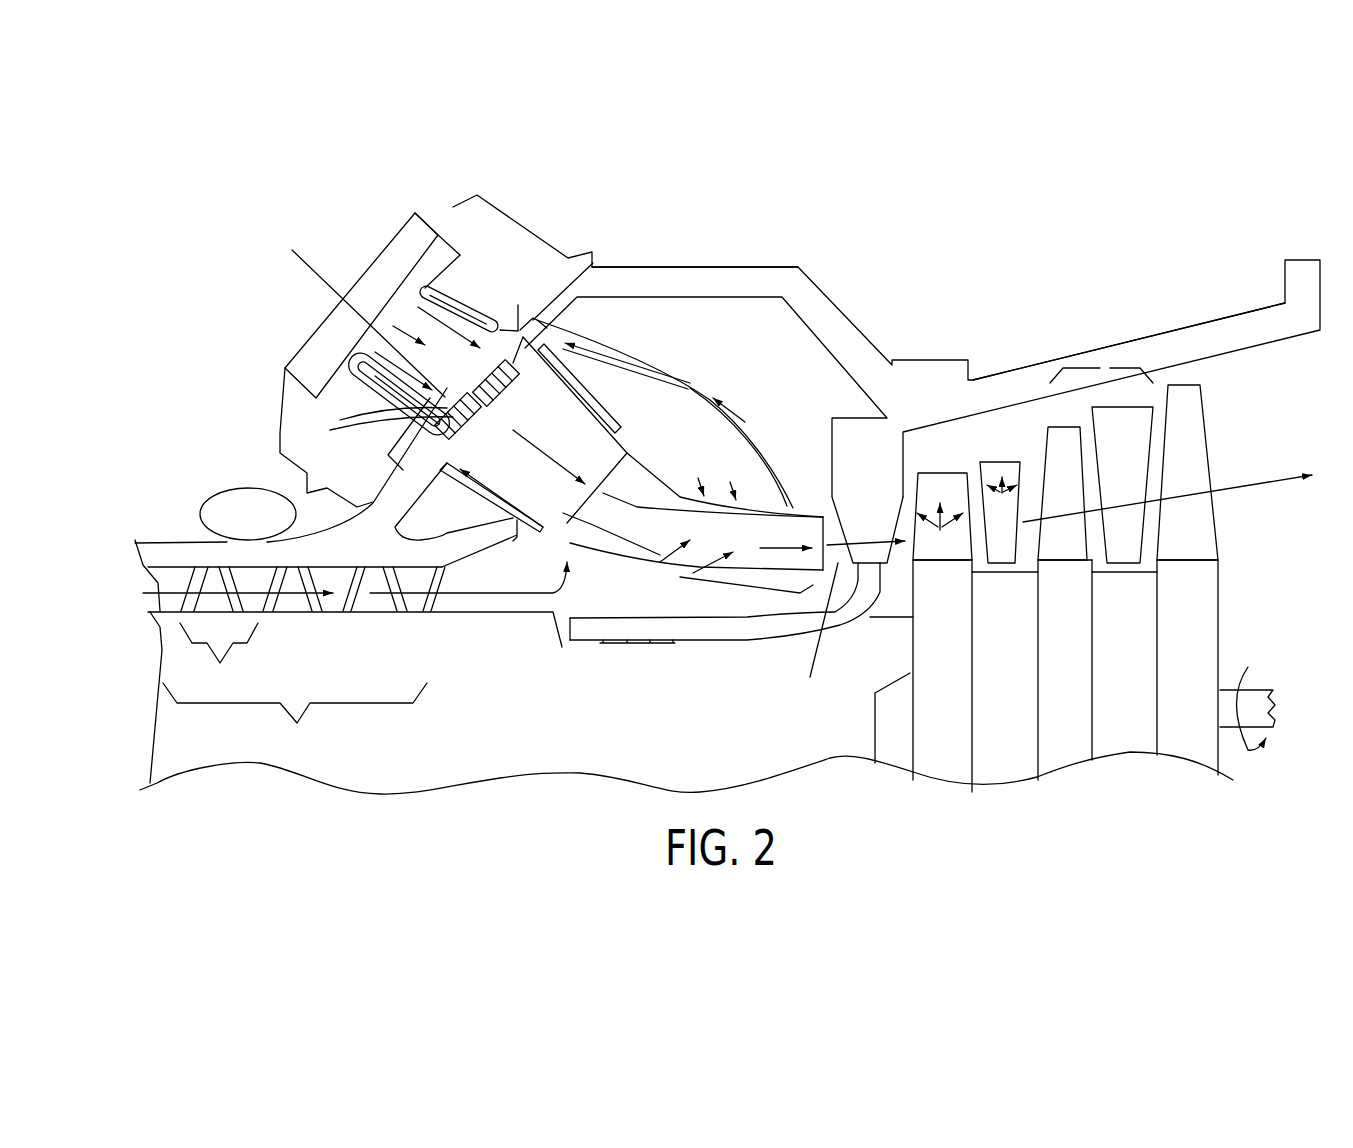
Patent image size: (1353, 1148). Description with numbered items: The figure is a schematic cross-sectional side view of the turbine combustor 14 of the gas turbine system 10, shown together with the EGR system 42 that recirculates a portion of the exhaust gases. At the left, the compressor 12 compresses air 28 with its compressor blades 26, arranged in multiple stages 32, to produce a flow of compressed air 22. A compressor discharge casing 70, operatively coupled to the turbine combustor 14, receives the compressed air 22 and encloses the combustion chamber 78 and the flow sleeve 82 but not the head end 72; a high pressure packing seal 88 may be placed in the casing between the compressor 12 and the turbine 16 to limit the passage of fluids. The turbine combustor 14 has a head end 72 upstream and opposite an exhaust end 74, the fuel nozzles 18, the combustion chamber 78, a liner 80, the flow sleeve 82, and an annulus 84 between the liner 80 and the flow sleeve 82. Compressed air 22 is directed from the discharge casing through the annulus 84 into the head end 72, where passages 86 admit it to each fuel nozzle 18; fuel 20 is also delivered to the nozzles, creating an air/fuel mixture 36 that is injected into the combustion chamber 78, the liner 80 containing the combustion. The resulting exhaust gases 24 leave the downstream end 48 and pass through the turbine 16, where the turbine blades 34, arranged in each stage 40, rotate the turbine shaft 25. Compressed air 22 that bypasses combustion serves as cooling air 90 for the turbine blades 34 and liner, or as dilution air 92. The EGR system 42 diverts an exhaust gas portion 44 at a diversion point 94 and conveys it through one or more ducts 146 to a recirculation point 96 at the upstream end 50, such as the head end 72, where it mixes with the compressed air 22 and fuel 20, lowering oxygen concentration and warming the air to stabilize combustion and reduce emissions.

The gas turbine system 10 is at (1015, 220).
The compressor 12 is at (297, 723).
The turbine combustor 14 is at (604, 466).
The turbine 16 is at (1331, 427).
The fuel nozzles 18 is at (395, 432).
The fuel 20 is at (329, 275).
The compressed air 22 is at (513, 587).
The exhaust gases 24 is at (1247, 477).
The turbine shaft 25 is at (1257, 690).
The compressor blades 26 is at (370, 602).
The air 28 is at (143, 593).
The stages 32 is at (217, 665).
The turbine blades 34 is at (1003, 462).
The air/fuel mixture 36 is at (522, 412).
The stage 40 is at (1104, 366).
The EGR system 42 is at (764, 358).
The exhaust gas portion 44 is at (505, 326).
The downstream end 48 is at (690, 575).
The upstream end 50 is at (590, 252).
The compressor discharge casing 70 is at (798, 267).
The head end 72 is at (300, 487).
The exhaust end 74 is at (853, 663).
The combustion chamber 78 is at (569, 503).
The liner 80 is at (522, 490).
The flow sleeve 82 is at (612, 420).
The annulus 84 is at (622, 445).
The passages 86 is at (340, 421).
The high pressure packing seal 88 is at (684, 643).
The cooling air 90 is at (967, 519).
The dilution air 92 is at (670, 553).
The diversion point 94 is at (795, 508).
The recirculation point 96 is at (455, 262).
The ducts 146 is at (745, 412).